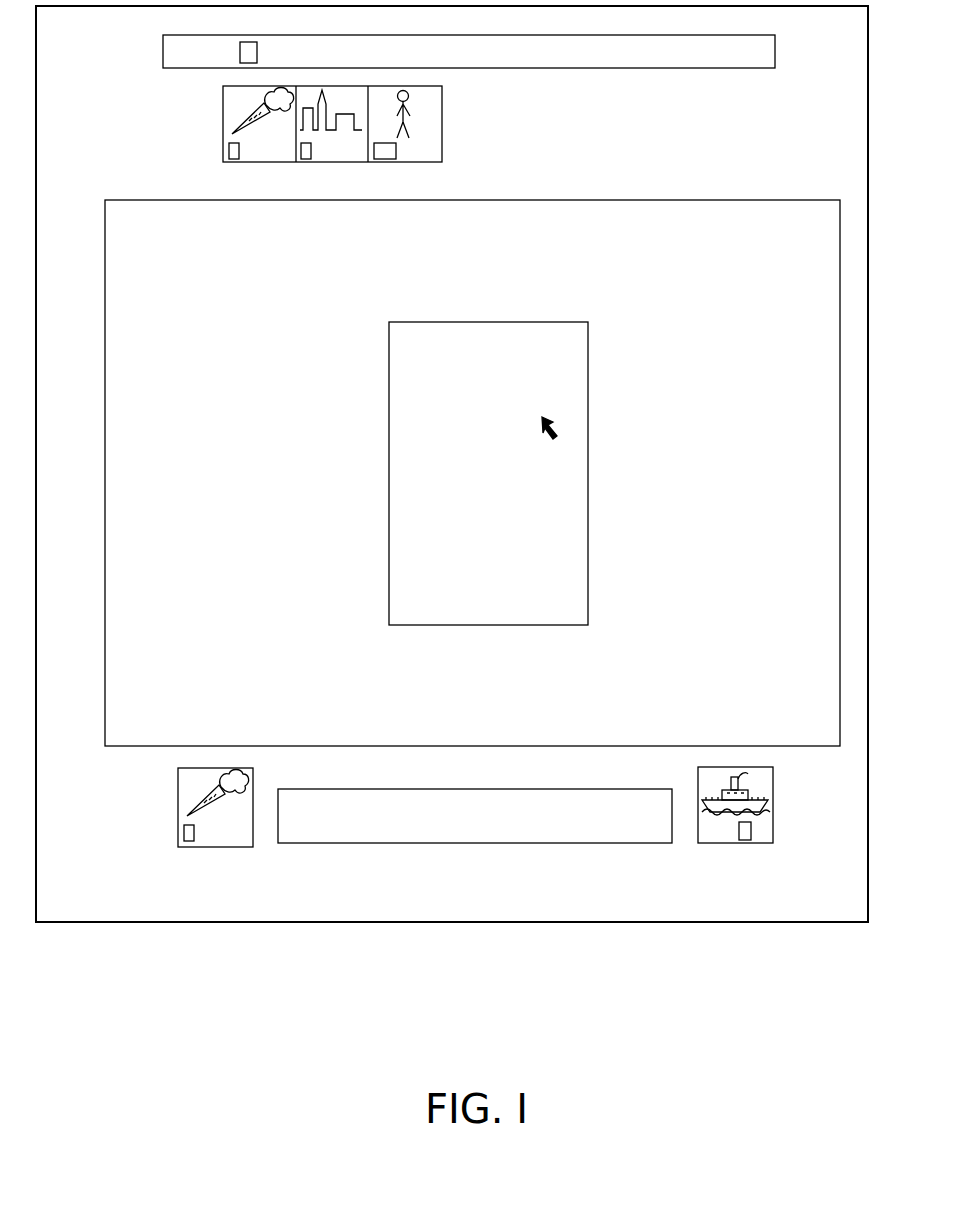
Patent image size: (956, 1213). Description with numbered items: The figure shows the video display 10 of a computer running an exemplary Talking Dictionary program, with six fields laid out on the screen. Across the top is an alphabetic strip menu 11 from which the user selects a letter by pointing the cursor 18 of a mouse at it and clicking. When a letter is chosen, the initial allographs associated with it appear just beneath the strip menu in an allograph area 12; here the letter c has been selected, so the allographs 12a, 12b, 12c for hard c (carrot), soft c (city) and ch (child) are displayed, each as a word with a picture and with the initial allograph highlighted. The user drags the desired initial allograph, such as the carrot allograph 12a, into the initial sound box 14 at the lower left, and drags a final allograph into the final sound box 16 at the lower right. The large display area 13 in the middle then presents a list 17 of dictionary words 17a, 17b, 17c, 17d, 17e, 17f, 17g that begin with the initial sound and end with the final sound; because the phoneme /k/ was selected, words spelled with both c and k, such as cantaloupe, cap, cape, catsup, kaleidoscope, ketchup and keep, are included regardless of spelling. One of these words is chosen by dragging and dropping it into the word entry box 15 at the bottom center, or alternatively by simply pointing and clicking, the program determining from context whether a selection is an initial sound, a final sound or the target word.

The video display 10 is at (362, 922).
The alphabetic strip menu 11 is at (163, 52).
The allograph area 12 is at (223, 116).
The initial allograph 12a is at (252, 162).
The initial allograph 12b is at (318, 162).
The initial allograph 12c is at (405, 162).
The display area 13 is at (105, 222).
The initial sound box 14 is at (178, 782).
The word entry box 15 is at (477, 843).
The final sound box 16 is at (734, 843).
The list 17 is at (389, 337).
The word 17a is at (478, 357).
The word 17b is at (446, 399).
The word 17c is at (450, 437).
The word 17d is at (459, 476).
The word 17e is at (486, 513).
The word 17f is at (462, 552).
The word 17g is at (451, 587).
The cursor 18 is at (556, 437).